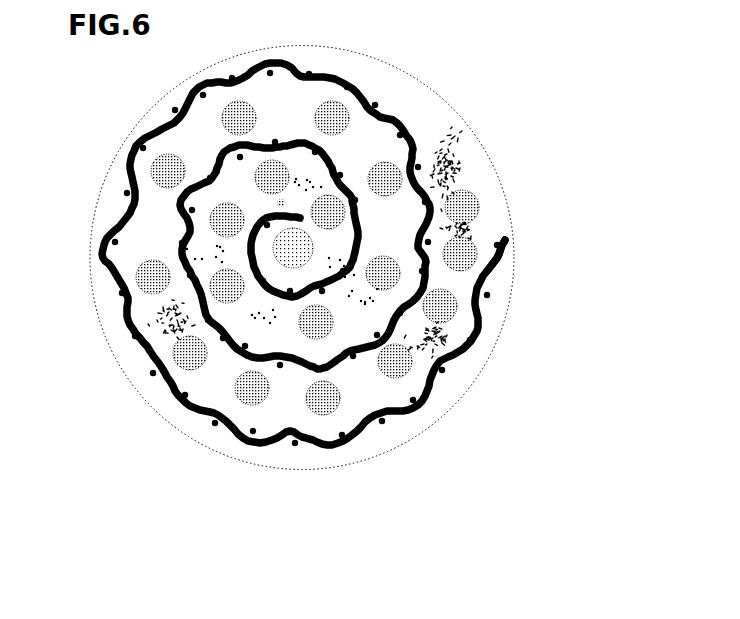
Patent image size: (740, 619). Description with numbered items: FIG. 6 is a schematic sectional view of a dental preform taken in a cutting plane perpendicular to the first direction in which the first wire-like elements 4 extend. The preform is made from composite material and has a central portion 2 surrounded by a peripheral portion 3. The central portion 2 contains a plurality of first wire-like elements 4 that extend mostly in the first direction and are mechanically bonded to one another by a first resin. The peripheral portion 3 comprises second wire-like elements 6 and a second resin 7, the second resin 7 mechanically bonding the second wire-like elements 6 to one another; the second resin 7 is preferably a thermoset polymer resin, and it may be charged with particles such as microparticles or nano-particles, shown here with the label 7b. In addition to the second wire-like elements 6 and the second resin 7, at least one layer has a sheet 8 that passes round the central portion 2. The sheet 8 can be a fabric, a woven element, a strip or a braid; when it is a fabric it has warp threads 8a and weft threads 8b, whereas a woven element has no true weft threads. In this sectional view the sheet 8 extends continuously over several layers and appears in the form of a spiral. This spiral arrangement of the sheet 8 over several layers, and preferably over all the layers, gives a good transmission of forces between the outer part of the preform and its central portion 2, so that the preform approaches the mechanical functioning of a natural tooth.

The central portion 2 is at (318, 237).
The peripheral portion 3 is at (428, 98).
The first wire-like elements 4 is at (414, 137).
The second wire-like elements 6 is at (230, 123).
The second resin 7 is at (217, 387).
The conductive additive agglomerates 7b is at (217, 247).
The sheet 8 is at (367, 95).
The warp threads 8a is at (499, 267).
The weft threads 8b is at (313, 73).